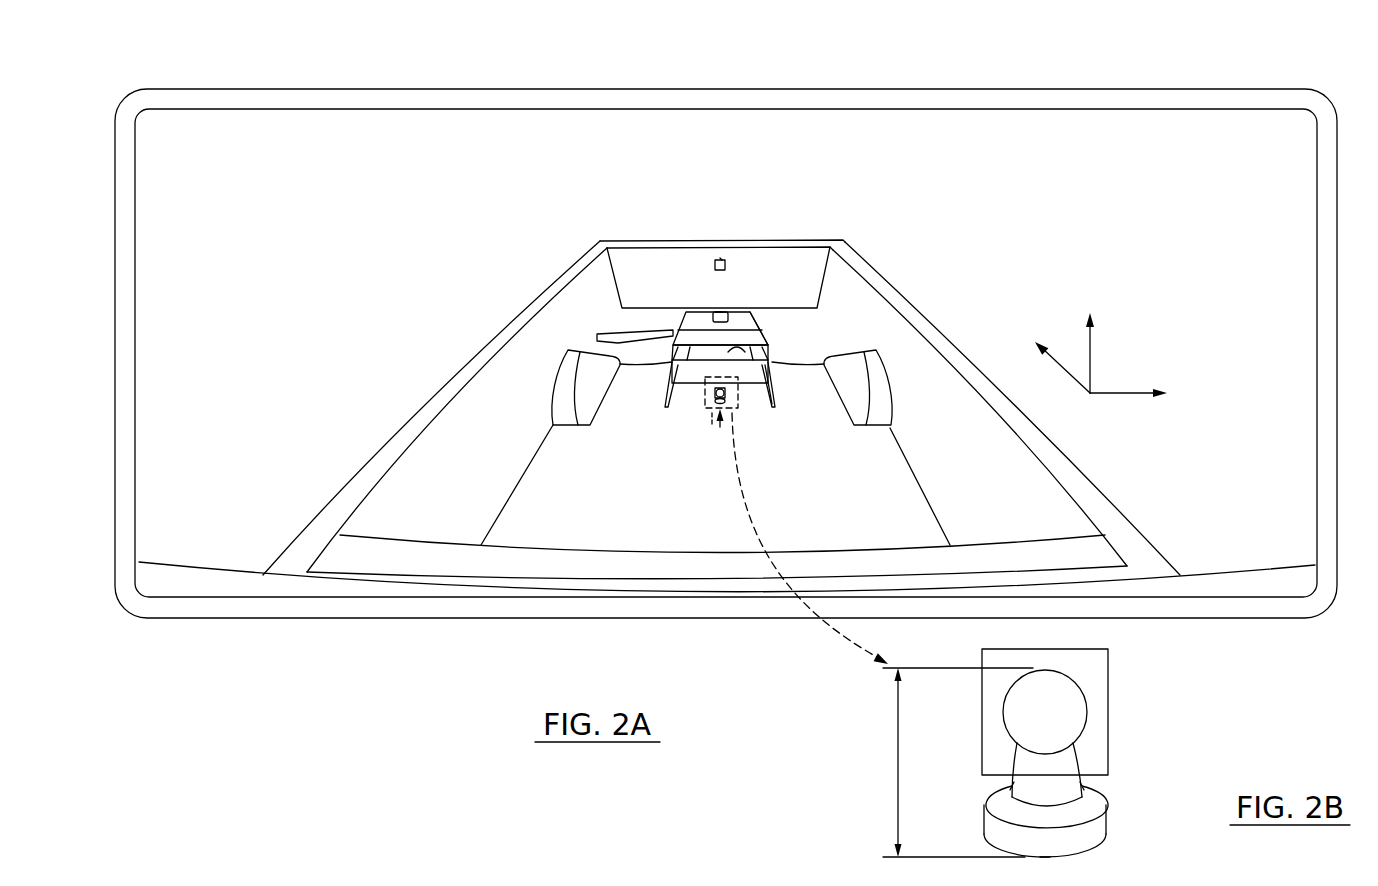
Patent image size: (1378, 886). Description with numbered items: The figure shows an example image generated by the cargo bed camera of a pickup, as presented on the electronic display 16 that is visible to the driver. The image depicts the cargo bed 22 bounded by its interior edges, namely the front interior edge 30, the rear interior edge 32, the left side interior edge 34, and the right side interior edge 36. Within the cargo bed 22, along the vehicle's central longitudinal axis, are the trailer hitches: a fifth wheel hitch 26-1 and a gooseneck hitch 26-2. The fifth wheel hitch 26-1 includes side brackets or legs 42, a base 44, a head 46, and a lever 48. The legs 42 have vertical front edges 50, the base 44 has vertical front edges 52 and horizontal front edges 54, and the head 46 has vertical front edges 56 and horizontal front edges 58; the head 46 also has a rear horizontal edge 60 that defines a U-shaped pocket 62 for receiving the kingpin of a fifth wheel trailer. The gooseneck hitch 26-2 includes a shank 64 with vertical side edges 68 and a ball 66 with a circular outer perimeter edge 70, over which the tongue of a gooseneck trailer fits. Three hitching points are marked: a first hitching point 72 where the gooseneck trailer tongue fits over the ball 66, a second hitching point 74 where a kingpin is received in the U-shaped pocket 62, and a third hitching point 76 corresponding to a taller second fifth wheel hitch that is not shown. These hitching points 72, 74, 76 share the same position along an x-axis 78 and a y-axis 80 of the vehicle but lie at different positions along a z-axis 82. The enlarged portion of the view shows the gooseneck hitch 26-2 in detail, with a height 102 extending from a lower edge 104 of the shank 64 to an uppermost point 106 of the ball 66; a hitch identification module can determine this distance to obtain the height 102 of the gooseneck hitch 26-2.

In FIG. 2A, the electronic display 16 is at (1157, 89).
In FIG. 2A, the cargo bed 22 is at (992, 506).
In FIG. 2A, the fifth wheel hitch 26-1 is at (760, 309).
In FIG. 2A, the gooseneck hitch 26-2 is at (721, 430).
In FIG. 2A, the front interior edge 30 is at (875, 545).
In FIG. 2A, the rear interior edge 32 is at (665, 249).
In FIG. 2A, the left side interior edge 34 is at (983, 385).
In FIG. 2A, the right side interior edge 36 is at (388, 487).
In FIG. 2A, the legs 42 is at (667, 386).
In FIG. 2A, the base 44 is at (683, 377).
In FIG. 2A, the head 46 is at (741, 315).
In FIG. 2A, the lever 48 is at (640, 338).
In FIG. 2A, the vertical front edges 50 is at (765, 407).
In FIG. 2A, the vertical front edges 52 is at (620, 363).
In FIG. 2A, the horizontal front edges 54 is at (736, 350).
In FIG. 2A, the vertical front edges 56 is at (680, 333).
In FIG. 2A, the horizontal front edges 58 is at (760, 314).
In FIG. 2A, the rear horizontal edge 60 is at (727, 314).
In FIG. 2A, the U-shaped pocket 62 is at (715, 316).
In FIG. 2B, the shank 64 is at (1050, 789).
In FIG. 2B, the ball 66 is at (1052, 720).
In FIG. 2B, the vertical side edges 68 is at (1017, 785).
In FIG. 2B, the circular outer perimeter edge 70 is at (1086, 697).
In FIG. 2A, the first hitching point 72 is at (716, 395).
In FIG. 2A, the second hitching point 74 is at (716, 312).
In FIG. 2A, the third hitching point 76 is at (721, 258).
In FIG. 2A, the x-axis 78 is at (1060, 360).
In FIG. 2A, the y-axis 80 is at (1130, 400).
In FIG. 2A, the z-axis 82 is at (1093, 355).
In FIG. 2B, the height 102 is at (897, 720).
In FIG. 2B, the lower edge 104 is at (1090, 846).
In FIG. 2B, the uppermost point 106 is at (1032, 669).